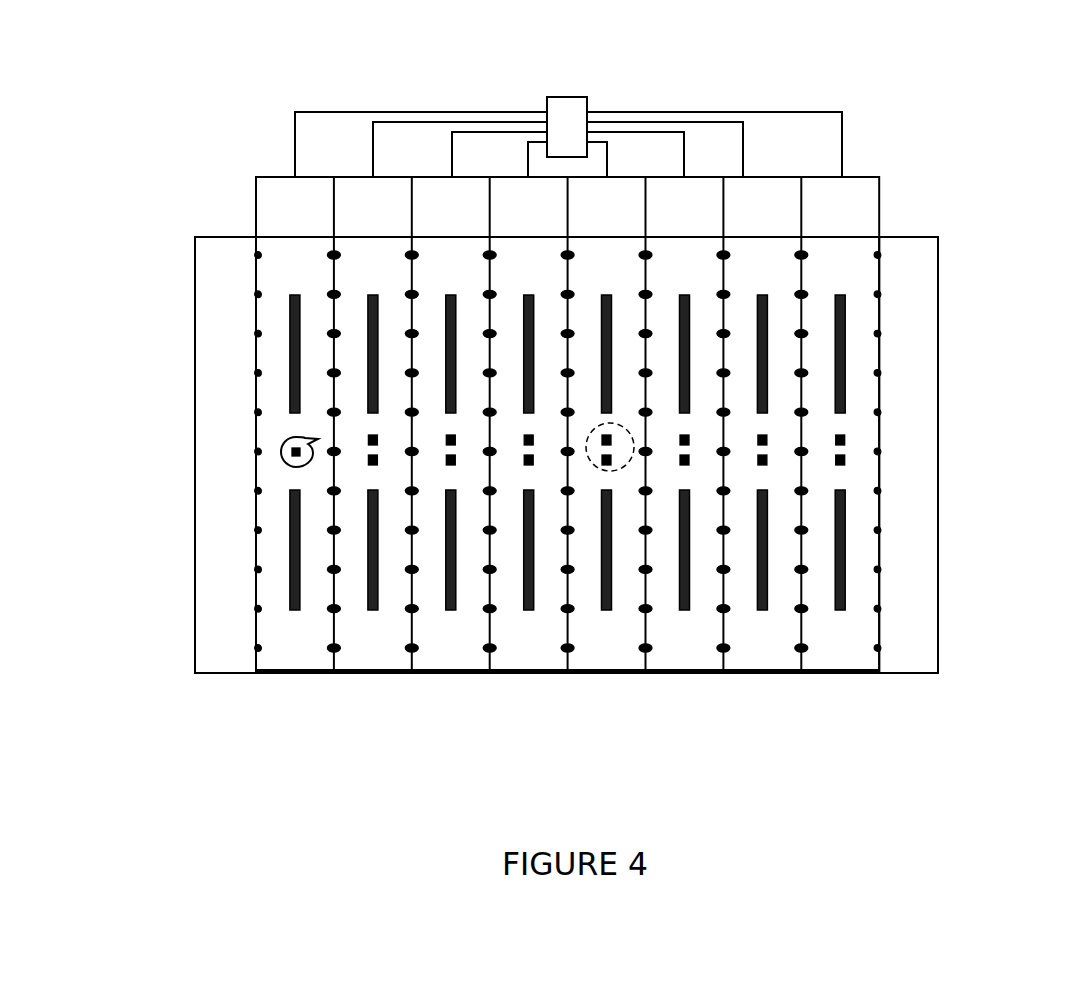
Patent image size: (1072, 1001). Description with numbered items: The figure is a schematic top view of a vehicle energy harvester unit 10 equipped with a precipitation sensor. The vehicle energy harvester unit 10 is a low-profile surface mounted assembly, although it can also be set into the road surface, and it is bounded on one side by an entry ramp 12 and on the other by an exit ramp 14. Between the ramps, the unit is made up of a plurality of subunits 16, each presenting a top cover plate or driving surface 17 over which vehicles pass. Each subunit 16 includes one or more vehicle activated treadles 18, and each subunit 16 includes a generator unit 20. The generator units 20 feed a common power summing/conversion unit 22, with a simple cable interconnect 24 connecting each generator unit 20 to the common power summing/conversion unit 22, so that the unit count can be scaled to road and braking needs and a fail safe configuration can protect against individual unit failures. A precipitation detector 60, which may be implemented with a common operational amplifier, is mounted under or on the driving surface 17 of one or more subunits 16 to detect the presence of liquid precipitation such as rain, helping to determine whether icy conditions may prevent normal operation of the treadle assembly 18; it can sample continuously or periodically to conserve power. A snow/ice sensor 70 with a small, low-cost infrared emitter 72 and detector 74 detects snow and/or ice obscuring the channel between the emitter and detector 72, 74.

The vehicle energy harvester unit 10 is at (1034, 728).
The entry ramp 12 is at (920, 553).
The exit ramp 14 is at (208, 587).
The subunit 16 is at (847, 670).
The driving surface 17 is at (764, 652).
The vehicle activated treadle 18 is at (294, 614).
The generator unit 20 is at (882, 193).
The common power summing/conversion unit 22 is at (566, 96).
The cable interconnect 24 is at (793, 112).
The precipitation detector 60 is at (264, 429).
The snow/ice sensor 70 is at (591, 482).
The infrared emitter 72 is at (860, 426).
The infrared detector 74 is at (864, 463).